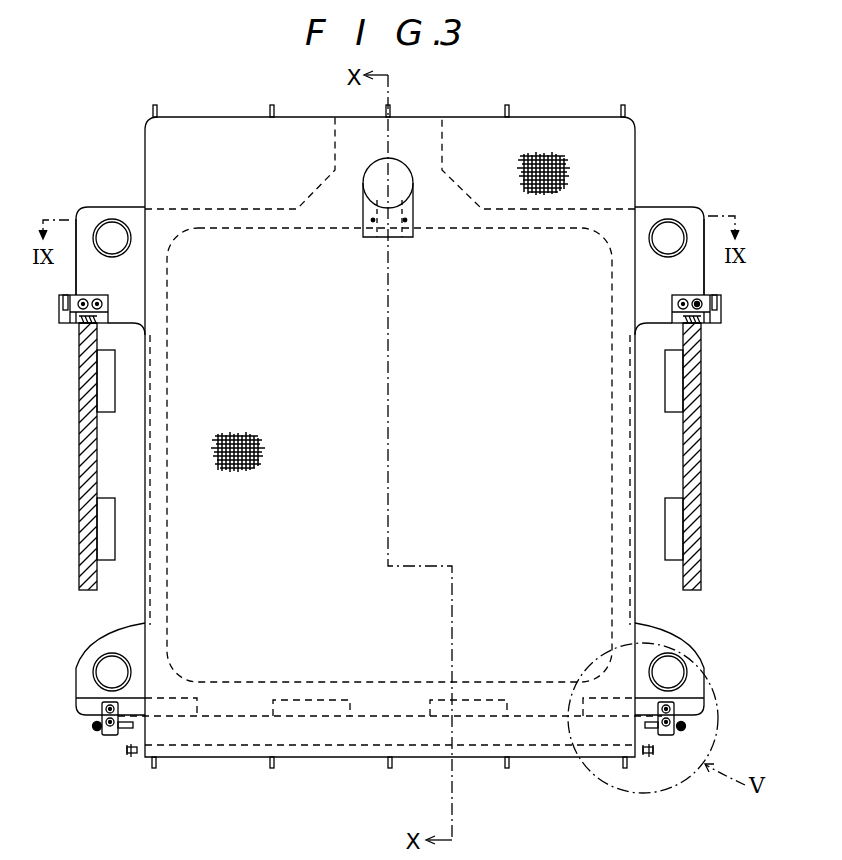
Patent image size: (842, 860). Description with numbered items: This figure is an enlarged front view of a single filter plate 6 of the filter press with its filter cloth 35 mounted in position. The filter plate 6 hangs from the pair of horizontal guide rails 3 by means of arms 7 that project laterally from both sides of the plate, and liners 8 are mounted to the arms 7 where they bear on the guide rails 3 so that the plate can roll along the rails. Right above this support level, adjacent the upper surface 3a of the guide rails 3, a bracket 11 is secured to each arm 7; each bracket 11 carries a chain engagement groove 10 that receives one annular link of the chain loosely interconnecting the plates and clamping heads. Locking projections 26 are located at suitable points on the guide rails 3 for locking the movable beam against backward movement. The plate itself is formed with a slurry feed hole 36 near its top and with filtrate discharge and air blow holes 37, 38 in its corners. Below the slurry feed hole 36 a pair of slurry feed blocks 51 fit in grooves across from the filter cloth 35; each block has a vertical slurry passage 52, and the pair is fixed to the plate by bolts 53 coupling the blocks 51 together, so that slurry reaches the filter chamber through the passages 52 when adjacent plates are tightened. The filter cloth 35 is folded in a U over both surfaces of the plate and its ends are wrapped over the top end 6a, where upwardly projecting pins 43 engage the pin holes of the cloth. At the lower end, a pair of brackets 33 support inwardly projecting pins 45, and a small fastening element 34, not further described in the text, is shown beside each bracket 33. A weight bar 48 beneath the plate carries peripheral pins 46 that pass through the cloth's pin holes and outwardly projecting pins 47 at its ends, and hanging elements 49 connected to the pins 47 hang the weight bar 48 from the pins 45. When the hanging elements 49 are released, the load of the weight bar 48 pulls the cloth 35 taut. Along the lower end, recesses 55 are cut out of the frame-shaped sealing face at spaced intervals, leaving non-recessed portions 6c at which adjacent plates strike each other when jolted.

The guide rail 3 is at (88, 437).
The upper surface of the guide rail 3a is at (670, 300).
The filter plate 6 is at (508, 533).
The top end of the filter plate 6a is at (585, 115).
The non-recessed portion of the lower end 6c is at (240, 712).
The arm 7 is at (103, 277).
The liner 8 is at (98, 323).
The chain engagement groove 10 is at (62, 305).
The bracket 11 is at (66, 318).
The locking projection 26 is at (107, 383).
The bracket 33 is at (112, 735).
The nut 34 is at (97, 730).
The filter cloth 35 is at (553, 272).
The slurry feed hole 36 is at (387, 185).
The filtrate discharge and air blow hole 37 is at (112, 672).
The filtrate discharge and air blow hole 38 is at (112, 238).
The upwardly projecting pin 43 is at (158, 110).
The inwardly projecting pin 45 is at (133, 725).
The pin 46 is at (155, 768).
The outwardly projecting pin 47 is at (135, 755).
The weight bar 48 is at (640, 757).
The hanging element 49 is at (128, 755).
The slurry feed block 51 is at (385, 228).
The vertical slurry passage 52 is at (400, 232).
The bolt 53 is at (373, 226).
The recess 55 is at (312, 708).